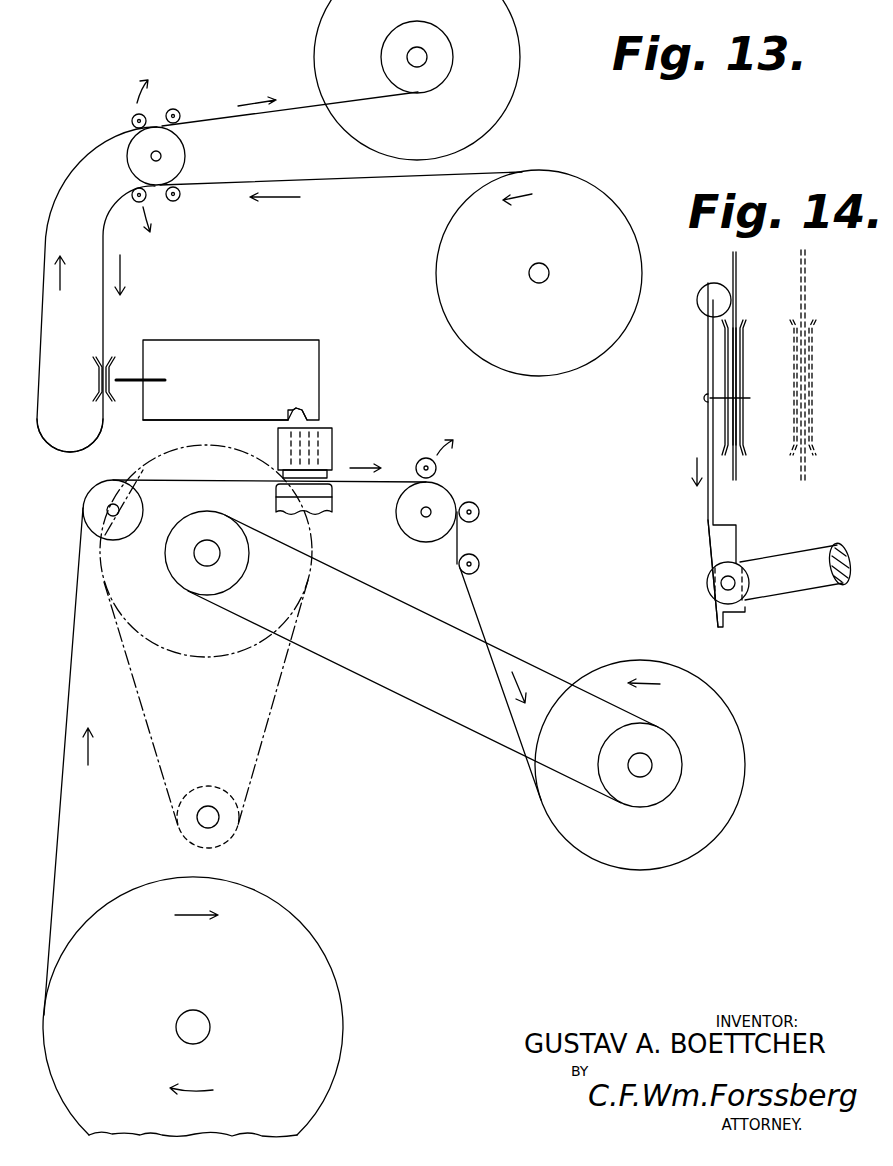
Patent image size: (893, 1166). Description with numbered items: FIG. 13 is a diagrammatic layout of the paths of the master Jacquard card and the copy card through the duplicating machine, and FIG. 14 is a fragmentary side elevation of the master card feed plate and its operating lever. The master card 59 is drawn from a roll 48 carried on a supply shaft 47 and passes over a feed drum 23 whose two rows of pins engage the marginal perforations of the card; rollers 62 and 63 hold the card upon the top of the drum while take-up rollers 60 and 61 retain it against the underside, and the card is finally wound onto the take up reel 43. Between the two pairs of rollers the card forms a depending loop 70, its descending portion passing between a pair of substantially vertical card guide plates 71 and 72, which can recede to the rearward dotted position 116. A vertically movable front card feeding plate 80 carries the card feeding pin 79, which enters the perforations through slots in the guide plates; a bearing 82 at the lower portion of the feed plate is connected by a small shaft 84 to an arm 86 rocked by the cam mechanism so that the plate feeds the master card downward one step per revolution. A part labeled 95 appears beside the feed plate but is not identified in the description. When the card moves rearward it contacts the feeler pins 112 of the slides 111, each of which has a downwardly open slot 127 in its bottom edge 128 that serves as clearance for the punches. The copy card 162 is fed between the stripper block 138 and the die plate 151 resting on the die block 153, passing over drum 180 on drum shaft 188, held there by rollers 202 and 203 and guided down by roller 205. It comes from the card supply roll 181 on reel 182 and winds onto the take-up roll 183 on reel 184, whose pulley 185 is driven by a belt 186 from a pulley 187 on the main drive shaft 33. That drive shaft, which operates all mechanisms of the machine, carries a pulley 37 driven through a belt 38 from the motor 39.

In FIG. 13, the feed drum 23 is at (127, 160).
In FIG. 13, the drive shaft 33 is at (214, 556).
In FIG. 13, the pulley 37 is at (306, 598).
In FIG. 13, the belt 38 is at (270, 722).
In FIG. 13, the motor 39 is at (210, 786).
In FIG. 13, the take up reel 43 is at (385, 47).
In FIG. 13, the supply shaft 47 is at (550, 270).
In FIG. 13, the roll 48 is at (438, 298).
In FIG. 13, the master card 59 is at (68, 174).
In FIG. 14, the master card 59 is at (739, 470).
In FIG. 13, the take-up roller 60 is at (177, 200).
In FIG. 13, the take-up roller 61 is at (138, 202).
In FIG. 13, the roller 62 is at (133, 116).
In FIG. 13, the roller 63 is at (176, 109).
In FIG. 13, the depending loop 70 is at (73, 452).
In FIG. 13, the card guide plate 71 is at (94, 362).
In FIG. 14, the card guide plate 71 is at (726, 361).
In FIG. 13, the card guide plate 72 is at (113, 360).
In FIG. 14, the card guide plate 72 is at (744, 344).
In FIG. 14, the card feeding pin 79 is at (748, 397).
In FIG. 14, the front card feeding plate 80 is at (707, 429).
In FIG. 14, the bearing 82 is at (710, 547).
In FIG. 14, the shaft 84 is at (722, 589).
In FIG. 14, the arm 86 is at (782, 545).
In FIG. 14, the roller 95 is at (702, 299).
In FIG. 13, the slide 111 is at (216, 342).
In FIG. 13, the feeler pin 112 is at (128, 386).
In FIG. 14, the rearward position 116 is at (806, 246).
In FIG. 13, the slot 127 is at (296, 407).
In FIG. 13, the bottom edge 128 is at (222, 421).
In FIG. 13, the stripper block 138 is at (333, 446).
In FIG. 13, the die plate 151 is at (333, 490).
In FIG. 13, the die block 153 is at (336, 511).
In FIG. 13, the copy card 162 is at (379, 484).
In FIG. 13, the drum 180 is at (410, 533).
In FIG. 13, the card supply roll 181 is at (321, 947).
In FIG. 13, the reel 182 is at (211, 1028).
In FIG. 13, the take-up roll 183 is at (577, 840).
In FIG. 13, the reel 184 is at (642, 778).
In FIG. 13, the pulley 185 is at (676, 780).
In FIG. 13, the belt 186 is at (475, 733).
In FIG. 13, the pulley 187 is at (200, 511).
In FIG. 13, the drum shaft 188 is at (428, 518).
In FIG. 13, the roller 202 is at (438, 466).
In FIG. 13, the roller 203 is at (481, 513).
In FIG. 13, the roller 205 is at (481, 565).